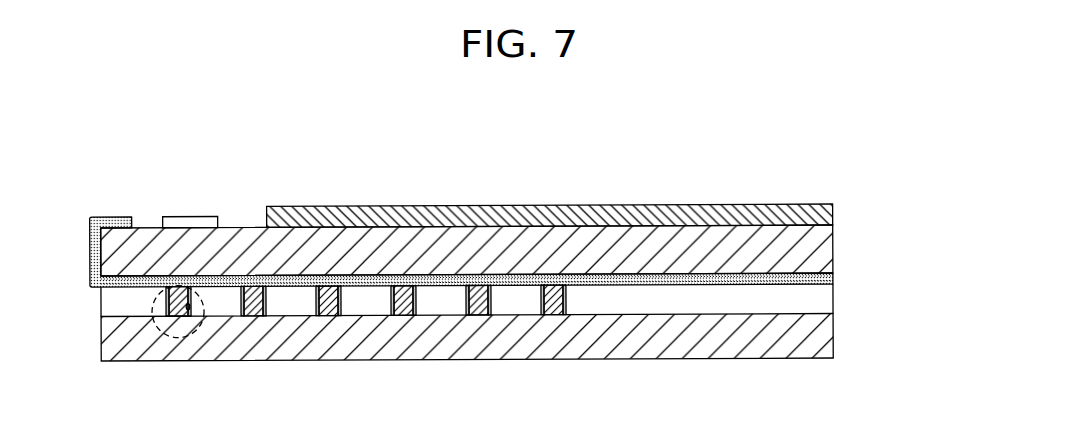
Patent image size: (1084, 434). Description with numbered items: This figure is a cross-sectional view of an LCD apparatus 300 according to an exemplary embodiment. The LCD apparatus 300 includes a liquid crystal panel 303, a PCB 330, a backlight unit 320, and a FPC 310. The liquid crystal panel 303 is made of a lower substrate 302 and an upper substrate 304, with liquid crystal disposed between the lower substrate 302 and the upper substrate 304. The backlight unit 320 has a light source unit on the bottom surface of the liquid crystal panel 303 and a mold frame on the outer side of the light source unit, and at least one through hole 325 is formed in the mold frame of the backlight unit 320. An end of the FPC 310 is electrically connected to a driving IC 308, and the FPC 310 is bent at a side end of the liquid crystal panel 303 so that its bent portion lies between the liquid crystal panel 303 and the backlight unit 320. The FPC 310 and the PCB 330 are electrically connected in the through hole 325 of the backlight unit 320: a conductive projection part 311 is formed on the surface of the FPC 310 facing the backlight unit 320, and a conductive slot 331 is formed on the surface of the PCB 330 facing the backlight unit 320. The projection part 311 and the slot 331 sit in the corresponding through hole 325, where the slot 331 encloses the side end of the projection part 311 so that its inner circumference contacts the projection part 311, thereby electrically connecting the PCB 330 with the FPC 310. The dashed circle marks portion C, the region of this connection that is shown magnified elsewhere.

The LCD apparatus 300 is at (712, 136).
The lower substrate 302 is at (833, 244).
The liquid crystal panel 303 is at (899, 207).
The upper substrate 304 is at (833, 215).
The driving IC 308 is at (192, 214).
The FPC 310 is at (113, 214).
The projection part 311 is at (184, 316).
The backlight unit 320 is at (818, 298).
The through hole 325 is at (193, 311).
The PCB 330 is at (820, 327).
The slot 331 is at (162, 316).
The portion C is at (177, 336).